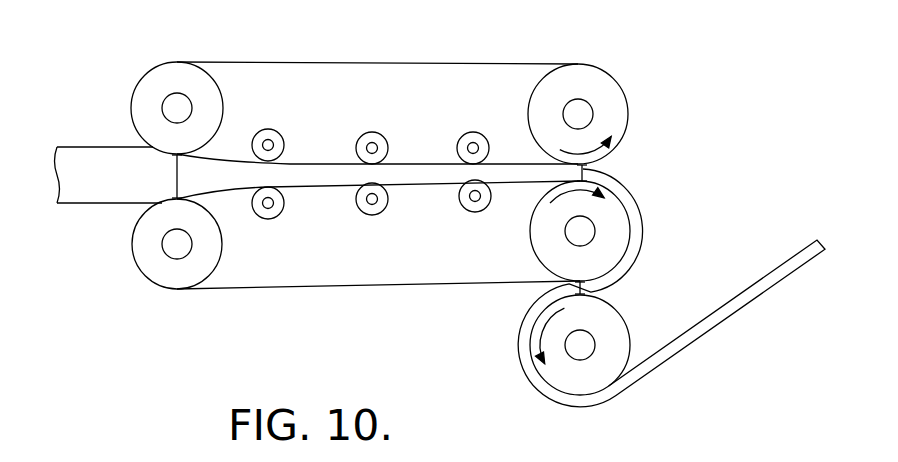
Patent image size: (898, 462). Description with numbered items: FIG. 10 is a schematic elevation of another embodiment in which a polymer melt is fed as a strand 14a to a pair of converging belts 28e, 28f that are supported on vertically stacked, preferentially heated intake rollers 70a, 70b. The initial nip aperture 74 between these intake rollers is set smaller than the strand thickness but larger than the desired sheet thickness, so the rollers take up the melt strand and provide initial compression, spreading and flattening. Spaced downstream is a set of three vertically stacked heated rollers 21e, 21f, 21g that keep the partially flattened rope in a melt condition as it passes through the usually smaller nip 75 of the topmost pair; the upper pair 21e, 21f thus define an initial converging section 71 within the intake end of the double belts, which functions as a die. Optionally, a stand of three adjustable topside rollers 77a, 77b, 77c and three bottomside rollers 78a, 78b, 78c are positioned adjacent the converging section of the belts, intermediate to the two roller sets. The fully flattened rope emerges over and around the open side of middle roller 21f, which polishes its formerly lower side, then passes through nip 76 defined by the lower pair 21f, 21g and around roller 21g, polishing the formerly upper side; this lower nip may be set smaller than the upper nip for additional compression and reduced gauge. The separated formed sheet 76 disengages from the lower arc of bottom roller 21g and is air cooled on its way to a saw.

The strand 14a is at (90, 194).
The upper converging belt 28e is at (372, 62).
The lower converging belt 28f is at (337, 289).
The upper intake roller 70a is at (158, 77).
The lower intake roller 70b is at (167, 280).
The topmost roller 21e is at (588, 77).
The middle roller 21f is at (548, 249).
The bottom roller 21g is at (616, 334).
The topside roller 77a is at (268, 130).
The topside roller 77b is at (372, 132).
The topside roller 77c is at (473, 132).
The bottomside roller 78a is at (270, 219).
The bottomside roller 78b is at (374, 215).
The bottomside roller 78c is at (478, 212).
The converging section 71 is at (298, 172).
The initial nip aperture 74 is at (181, 177).
The upper nip 75 is at (590, 167).
The nip / formed sheet 76 is at (560, 287).